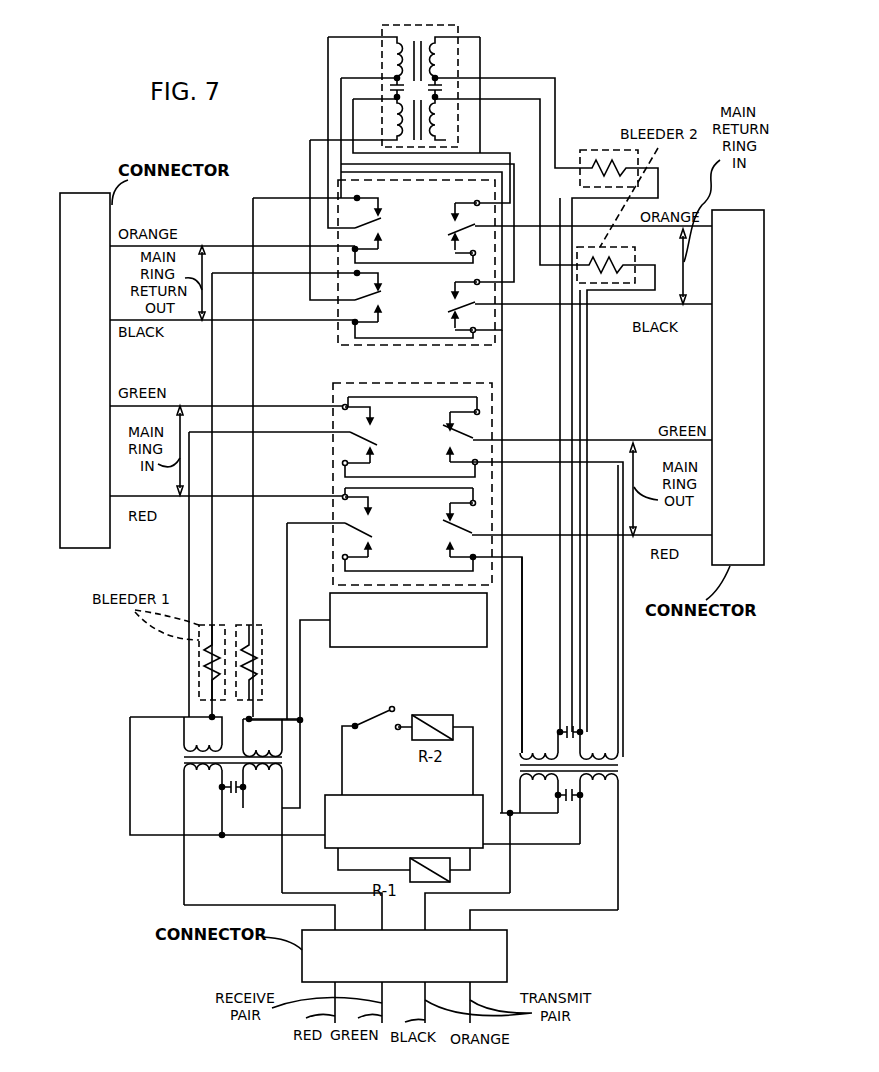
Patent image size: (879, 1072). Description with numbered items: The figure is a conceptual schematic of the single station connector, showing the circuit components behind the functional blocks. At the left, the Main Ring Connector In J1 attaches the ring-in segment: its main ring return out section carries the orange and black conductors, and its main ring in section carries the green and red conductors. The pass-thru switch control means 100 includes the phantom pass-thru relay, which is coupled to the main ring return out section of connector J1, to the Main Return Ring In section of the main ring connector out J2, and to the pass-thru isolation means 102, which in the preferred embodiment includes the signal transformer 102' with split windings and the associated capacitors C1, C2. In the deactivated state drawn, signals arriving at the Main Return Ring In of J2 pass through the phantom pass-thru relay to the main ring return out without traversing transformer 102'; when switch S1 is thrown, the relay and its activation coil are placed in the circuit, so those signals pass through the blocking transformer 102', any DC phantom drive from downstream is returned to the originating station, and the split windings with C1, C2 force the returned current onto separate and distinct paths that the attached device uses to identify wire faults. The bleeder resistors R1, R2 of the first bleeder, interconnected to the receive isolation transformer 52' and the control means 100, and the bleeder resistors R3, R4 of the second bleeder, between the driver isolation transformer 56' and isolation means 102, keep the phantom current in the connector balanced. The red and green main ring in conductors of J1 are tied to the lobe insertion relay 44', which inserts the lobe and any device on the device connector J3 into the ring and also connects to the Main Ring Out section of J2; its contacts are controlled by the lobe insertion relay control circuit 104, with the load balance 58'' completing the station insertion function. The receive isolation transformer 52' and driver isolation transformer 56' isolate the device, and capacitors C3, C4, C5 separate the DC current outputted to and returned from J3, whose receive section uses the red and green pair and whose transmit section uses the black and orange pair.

The pass-thru isolation means 102 is at (428, 84).
The signal transformer 102' is at (441, 96).
The pass-thru switch control means 100 is at (368, 348).
The lobe insertion relay 44' is at (478, 559).
The load balance 58'' is at (410, 641).
The receive isolation transformer 52' is at (227, 810).
The driver isolation transformer 56' is at (573, 687).
The lobe insertion relay control circuit 104 is at (322, 812).
The Main Ring Connector In J1 is at (96, 192).
The main ring connector out J2 is at (740, 210).
The device connector J3 is at (507, 967).
The capacitor C1 is at (392, 86).
The capacitor C2 is at (446, 90).
The capacitor C3 is at (231, 795).
The capacitor C4 is at (568, 803).
The capacitor C5 is at (572, 726).
The bleeder resistor R1 is at (192, 663).
The bleeder resistor R2 is at (255, 650).
The bleeder resistor R3 is at (602, 156).
The bleeder resistor R4 is at (581, 269).
The switch S1 is at (377, 751).